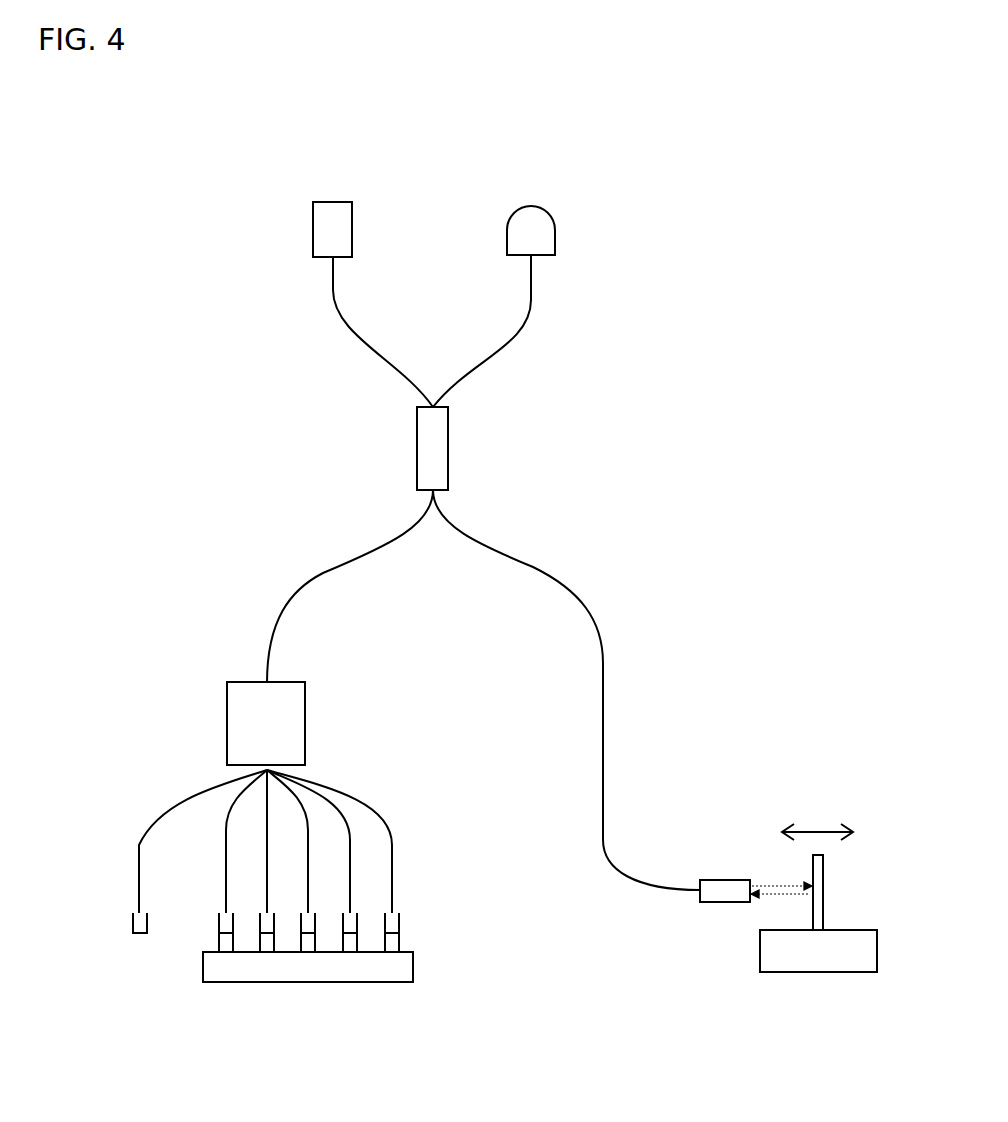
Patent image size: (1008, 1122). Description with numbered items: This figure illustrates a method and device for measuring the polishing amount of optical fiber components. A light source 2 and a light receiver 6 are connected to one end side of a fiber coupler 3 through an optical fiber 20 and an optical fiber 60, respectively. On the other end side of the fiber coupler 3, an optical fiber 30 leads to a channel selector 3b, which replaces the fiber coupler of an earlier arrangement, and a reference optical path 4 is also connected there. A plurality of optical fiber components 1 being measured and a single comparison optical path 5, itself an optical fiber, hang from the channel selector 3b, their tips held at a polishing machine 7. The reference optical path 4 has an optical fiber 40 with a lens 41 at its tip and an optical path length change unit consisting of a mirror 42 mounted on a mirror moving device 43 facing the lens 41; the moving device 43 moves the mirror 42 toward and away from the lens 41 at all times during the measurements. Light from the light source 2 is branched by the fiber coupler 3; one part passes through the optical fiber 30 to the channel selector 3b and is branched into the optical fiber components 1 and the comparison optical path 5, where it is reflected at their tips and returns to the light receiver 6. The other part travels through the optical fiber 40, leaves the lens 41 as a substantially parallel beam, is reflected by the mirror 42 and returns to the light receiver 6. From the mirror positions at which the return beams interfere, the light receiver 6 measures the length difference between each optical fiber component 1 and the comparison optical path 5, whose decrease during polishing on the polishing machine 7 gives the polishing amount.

The optical fiber component 1 is at (265, 858).
The light source 2 is at (313, 226).
The fiber coupler 3 is at (448, 447).
The channel selector 3b is at (305, 723).
The reference optical path 4 is at (665, 767).
The comparison optical path 5 is at (135, 863).
The light receiver 6 is at (555, 232).
The polishing machine 7 is at (312, 983).
The optical fiber 20 is at (345, 320).
The optical fiber 30 is at (325, 572).
The optical fiber 40 is at (600, 683).
The lens 41 is at (715, 880).
The mirror 42 is at (823, 871).
The mirror moving device 43 is at (815, 974).
The optical fiber 60 is at (530, 305).